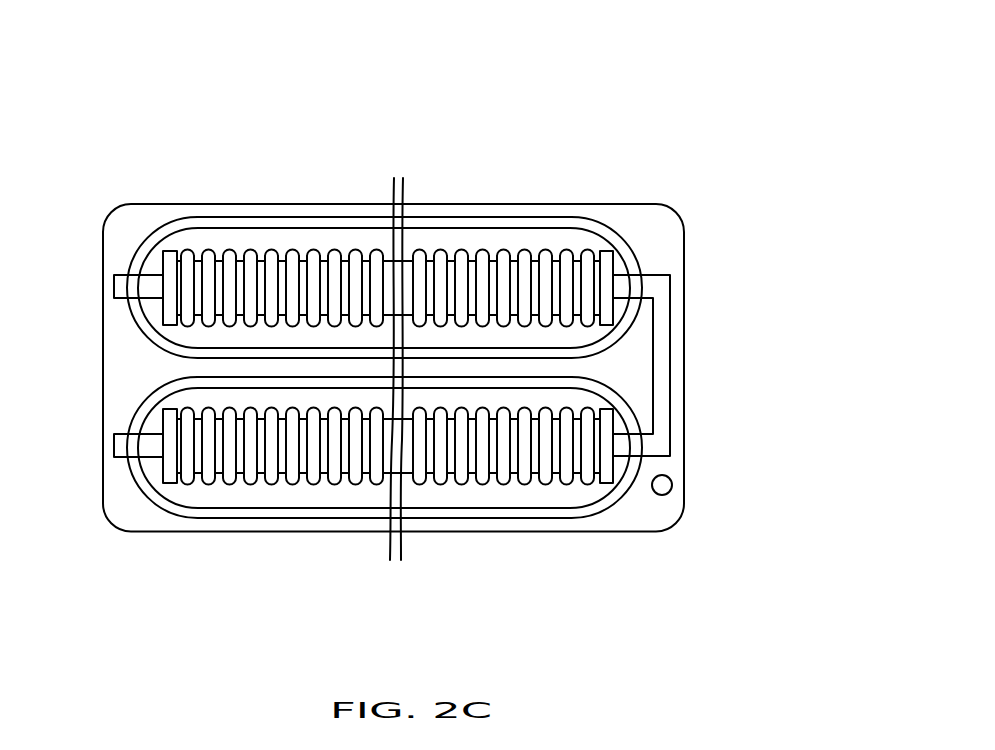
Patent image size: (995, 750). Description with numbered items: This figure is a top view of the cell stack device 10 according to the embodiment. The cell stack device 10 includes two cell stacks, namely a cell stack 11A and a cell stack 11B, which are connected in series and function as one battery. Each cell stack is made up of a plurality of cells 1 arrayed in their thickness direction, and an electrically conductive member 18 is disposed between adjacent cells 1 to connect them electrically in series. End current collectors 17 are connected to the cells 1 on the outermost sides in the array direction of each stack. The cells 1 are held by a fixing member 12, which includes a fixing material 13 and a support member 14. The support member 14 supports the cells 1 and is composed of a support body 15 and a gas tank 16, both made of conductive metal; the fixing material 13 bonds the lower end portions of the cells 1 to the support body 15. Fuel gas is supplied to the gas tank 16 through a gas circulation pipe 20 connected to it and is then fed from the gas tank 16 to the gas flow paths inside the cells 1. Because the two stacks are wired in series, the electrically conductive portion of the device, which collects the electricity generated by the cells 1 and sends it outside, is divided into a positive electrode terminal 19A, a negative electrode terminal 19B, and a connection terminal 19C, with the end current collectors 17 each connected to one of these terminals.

The cell stack device 10 is at (683, 83).
The fixing member 12 is at (688, 185).
The cell stack 11A is at (470, 492).
The cell stack 11B is at (313, 240).
The fixing material 13 is at (577, 240).
The support member 14 is at (747, 185).
The support body 15 is at (632, 253).
The gas tank 16 is at (662, 263).
The end current collector 17 is at (173, 252).
The electrically conductive member 18 is at (472, 257).
The cell 1 is at (545, 257).
The positive electrode terminal 19A is at (120, 444).
The negative electrode terminal 19B is at (120, 285).
The connection terminal 19C is at (662, 408).
The gas circulation pipe 20 is at (668, 488).